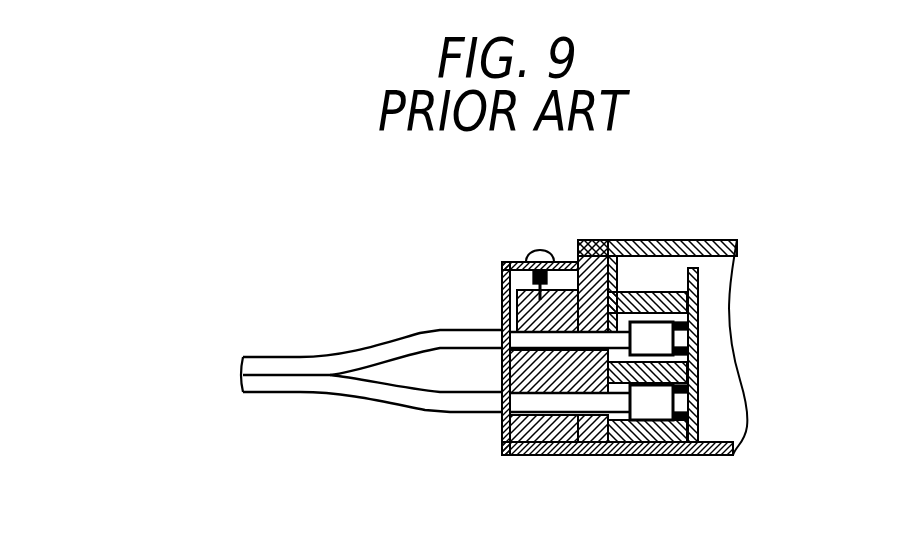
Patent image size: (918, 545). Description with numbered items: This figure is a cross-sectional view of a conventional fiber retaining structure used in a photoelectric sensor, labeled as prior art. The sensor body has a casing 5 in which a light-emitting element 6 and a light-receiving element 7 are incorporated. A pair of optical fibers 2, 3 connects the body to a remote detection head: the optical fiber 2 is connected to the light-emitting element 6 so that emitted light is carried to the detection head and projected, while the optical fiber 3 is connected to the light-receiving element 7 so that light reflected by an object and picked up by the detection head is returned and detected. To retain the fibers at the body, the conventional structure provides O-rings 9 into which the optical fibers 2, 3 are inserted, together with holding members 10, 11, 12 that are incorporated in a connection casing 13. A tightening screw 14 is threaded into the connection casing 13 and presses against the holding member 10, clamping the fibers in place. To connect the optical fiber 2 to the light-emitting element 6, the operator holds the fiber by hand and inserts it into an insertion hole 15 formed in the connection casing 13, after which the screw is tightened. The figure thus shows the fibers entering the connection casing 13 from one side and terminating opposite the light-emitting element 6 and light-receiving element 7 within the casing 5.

The optical fiber 2 is at (340, 397).
The optical fiber 3 is at (350, 345).
The casing 5 is at (708, 456).
The light-emitting element 6 is at (655, 408).
The light-receiving element 7 is at (655, 345).
The O-rings 9 is at (572, 325).
The holding member 10 is at (502, 286).
The holding member 11 is at (502, 404).
The holding member 12 is at (525, 455).
The connection casing 13 is at (502, 312).
The tightening screw 14 is at (544, 247).
The insertion hole 15 is at (502, 392).